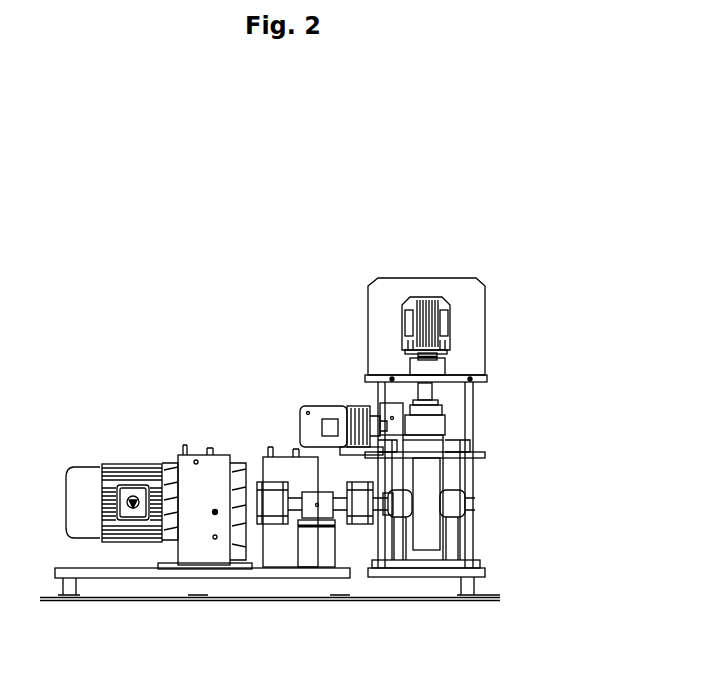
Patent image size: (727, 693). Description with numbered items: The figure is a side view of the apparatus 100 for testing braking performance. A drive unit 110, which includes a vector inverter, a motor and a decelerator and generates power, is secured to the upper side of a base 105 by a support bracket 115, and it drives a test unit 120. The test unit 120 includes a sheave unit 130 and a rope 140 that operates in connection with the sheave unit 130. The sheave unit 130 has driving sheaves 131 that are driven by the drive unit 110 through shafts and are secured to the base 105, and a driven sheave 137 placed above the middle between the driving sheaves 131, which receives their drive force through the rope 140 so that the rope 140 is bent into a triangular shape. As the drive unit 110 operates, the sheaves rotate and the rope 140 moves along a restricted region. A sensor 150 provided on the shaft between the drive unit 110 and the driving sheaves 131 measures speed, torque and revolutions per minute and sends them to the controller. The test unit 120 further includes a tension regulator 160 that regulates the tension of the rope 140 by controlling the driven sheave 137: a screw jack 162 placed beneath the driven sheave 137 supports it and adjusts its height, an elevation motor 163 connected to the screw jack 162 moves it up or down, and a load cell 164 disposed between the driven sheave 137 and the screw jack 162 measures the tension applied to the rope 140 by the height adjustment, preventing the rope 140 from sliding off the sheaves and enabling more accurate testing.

The apparatus for testing braking performance 100 is at (157, 185).
The base 105 is at (118, 578).
The drive unit 110 is at (164, 438).
The support bracket 115 is at (200, 548).
The test unit 120 is at (495, 117).
The sheave unit 130 is at (455, 178).
The driving sheaves 131 is at (430, 352).
The driven sheave 137 is at (420, 295).
The rope 140 is at (428, 473).
The sensor 150 is at (320, 507).
The tension regulator 160 is at (340, 302).
The screw jack 162 is at (422, 398).
The elevation motor 163 is at (328, 408).
The load cell 164 is at (411, 370).